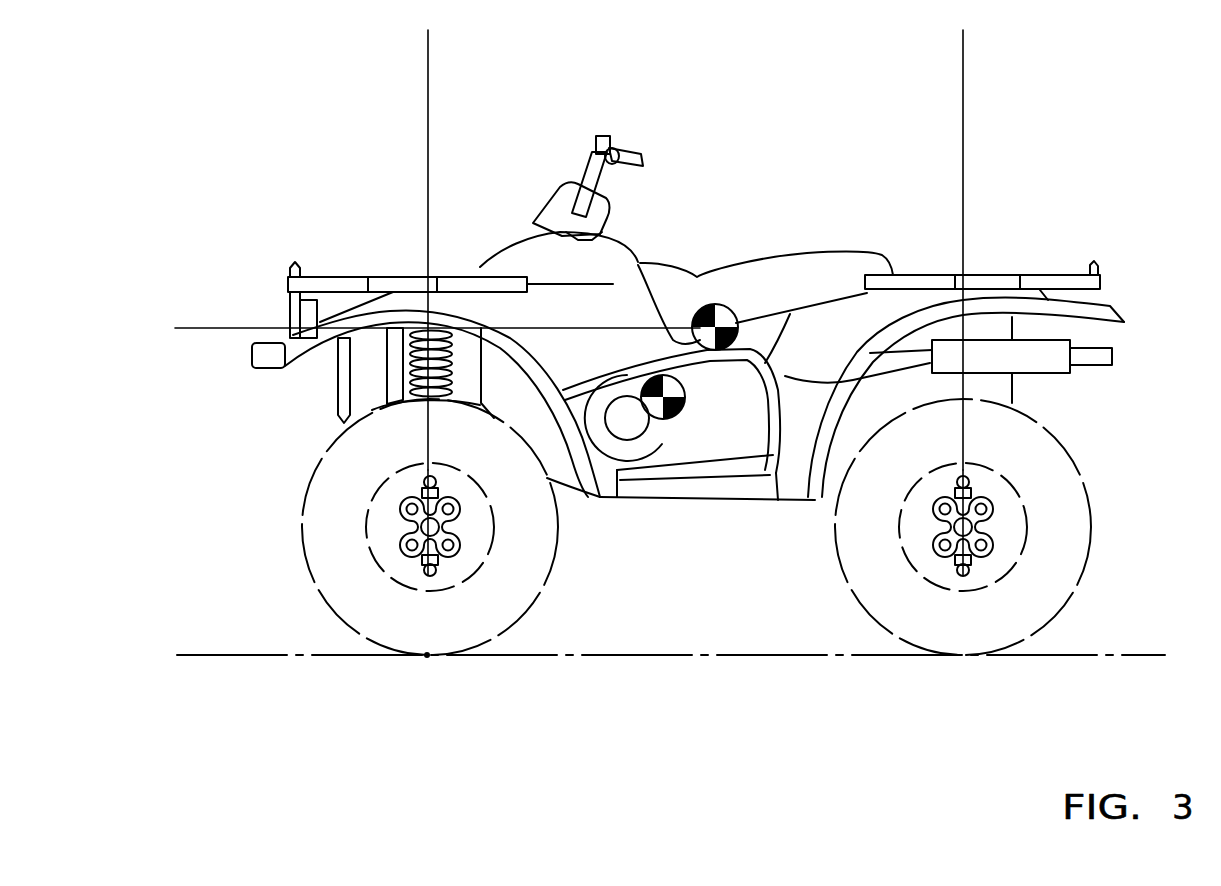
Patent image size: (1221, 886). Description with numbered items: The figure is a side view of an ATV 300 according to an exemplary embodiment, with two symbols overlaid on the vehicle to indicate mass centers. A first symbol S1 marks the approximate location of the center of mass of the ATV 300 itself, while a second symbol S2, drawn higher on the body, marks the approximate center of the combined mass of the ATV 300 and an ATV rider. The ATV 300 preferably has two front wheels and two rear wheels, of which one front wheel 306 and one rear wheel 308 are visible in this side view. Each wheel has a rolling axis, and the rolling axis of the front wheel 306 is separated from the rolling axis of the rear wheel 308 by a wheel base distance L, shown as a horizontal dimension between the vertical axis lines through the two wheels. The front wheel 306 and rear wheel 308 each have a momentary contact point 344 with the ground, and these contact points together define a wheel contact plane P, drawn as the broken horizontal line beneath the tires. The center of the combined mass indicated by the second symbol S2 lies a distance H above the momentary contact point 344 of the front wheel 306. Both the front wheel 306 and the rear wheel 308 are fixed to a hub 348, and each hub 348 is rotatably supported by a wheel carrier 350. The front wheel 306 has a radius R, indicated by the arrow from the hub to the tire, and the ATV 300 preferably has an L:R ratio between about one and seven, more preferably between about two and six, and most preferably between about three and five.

The ATV 300 is at (928, 730).
The front wheel 306 is at (363, 628).
The rear wheel 308 is at (1083, 483).
The momentary contact point 344 is at (425, 657).
The hub 348 is at (455, 548).
The wheel carrier 350 is at (423, 500).
The first symbol S1 is at (678, 415).
The second symbol S2 is at (705, 308).
The distance H is at (192, 336).
The wheel base distance L is at (955, 53).
The radius R is at (430, 527).
The wheel contact plane P is at (1148, 655).